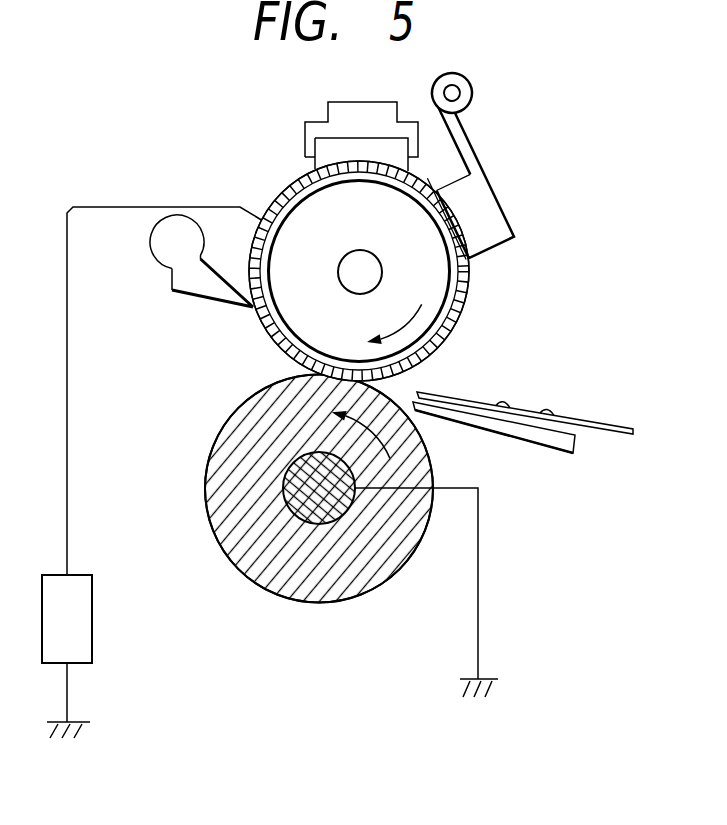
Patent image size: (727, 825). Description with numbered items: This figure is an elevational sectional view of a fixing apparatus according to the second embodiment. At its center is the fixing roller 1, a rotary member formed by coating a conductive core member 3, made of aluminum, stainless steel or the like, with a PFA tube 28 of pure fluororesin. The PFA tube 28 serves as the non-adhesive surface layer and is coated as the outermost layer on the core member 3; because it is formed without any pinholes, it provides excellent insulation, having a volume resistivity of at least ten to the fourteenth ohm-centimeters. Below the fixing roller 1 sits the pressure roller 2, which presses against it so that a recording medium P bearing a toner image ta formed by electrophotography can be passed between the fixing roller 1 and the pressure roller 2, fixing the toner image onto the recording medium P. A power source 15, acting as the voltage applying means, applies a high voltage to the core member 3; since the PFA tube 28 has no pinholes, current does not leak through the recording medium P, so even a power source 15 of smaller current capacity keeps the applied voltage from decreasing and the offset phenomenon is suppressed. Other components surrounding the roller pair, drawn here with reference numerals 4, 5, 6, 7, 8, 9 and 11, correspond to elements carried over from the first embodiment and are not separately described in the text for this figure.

The fixing roller 1 is at (484, 314).
The pressure roller 2 is at (238, 591).
The core member 3 is at (288, 180).
The conductive drum base 4 is at (263, 317).
The core shaft of transfer roller 5 is at (302, 507).
The elastic layer of transfer roller 6 is at (215, 475).
The cleaning blade 7 is at (473, 148).
The charging device 8 is at (178, 277).
The developing unit 9 is at (327, 148).
The transfer guide 11 is at (525, 442).
The power source 15 is at (87, 572).
The PFA tube 28 is at (270, 207).
The toner image ta is at (507, 402).
The recording medium P is at (610, 423).